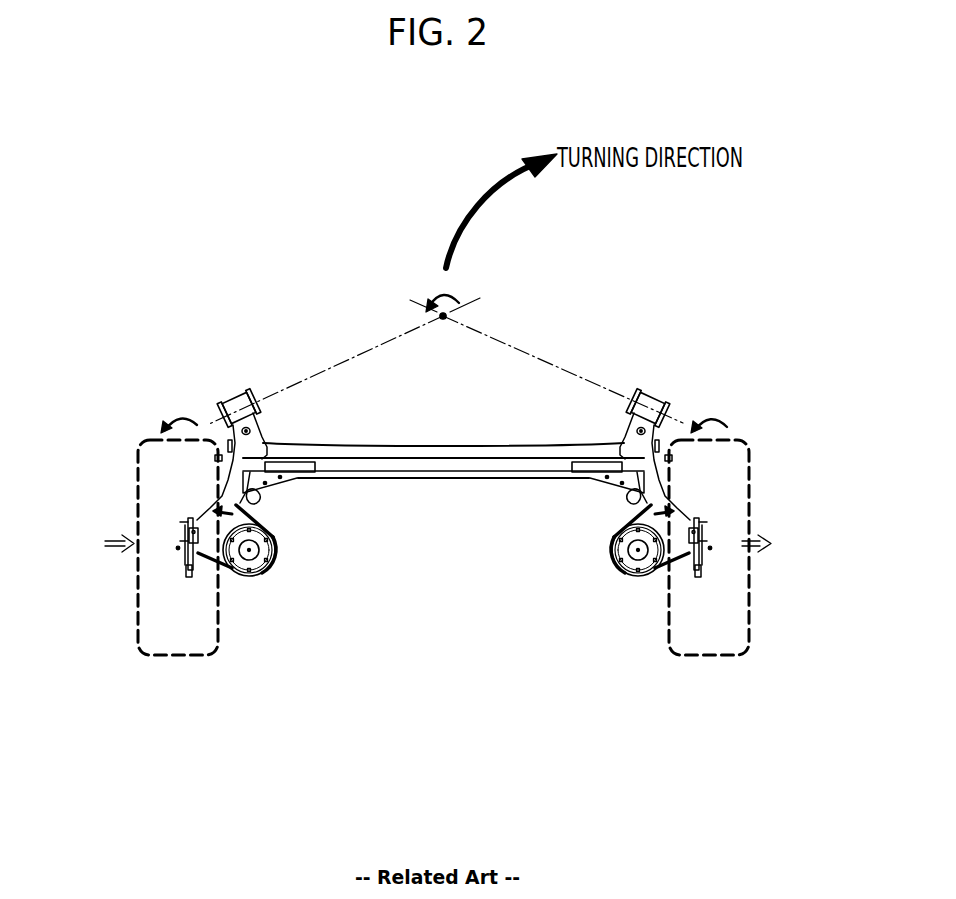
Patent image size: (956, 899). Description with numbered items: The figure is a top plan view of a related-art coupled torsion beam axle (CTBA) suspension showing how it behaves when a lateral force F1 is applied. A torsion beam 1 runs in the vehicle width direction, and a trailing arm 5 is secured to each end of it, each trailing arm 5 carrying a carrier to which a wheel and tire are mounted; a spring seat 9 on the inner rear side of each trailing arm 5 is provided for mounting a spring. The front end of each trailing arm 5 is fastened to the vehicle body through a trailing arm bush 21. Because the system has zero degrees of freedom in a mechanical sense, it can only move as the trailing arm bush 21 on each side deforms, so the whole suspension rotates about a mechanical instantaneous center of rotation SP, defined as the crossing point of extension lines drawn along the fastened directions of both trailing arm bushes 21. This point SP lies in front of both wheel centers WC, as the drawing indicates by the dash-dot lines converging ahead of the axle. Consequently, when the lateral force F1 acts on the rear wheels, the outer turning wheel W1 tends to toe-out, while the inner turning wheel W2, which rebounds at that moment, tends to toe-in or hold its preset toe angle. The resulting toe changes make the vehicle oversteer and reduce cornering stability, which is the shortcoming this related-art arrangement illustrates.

The torsion beam 1 is at (443, 480).
The trailing arm bush 21 is at (239, 392).
The trailing arm 5 is at (257, 501).
The spring seat 9 is at (272, 560).
The mechanical instantaneous center of rotation SP is at (443, 330).
The outer turning wheel W1 is at (190, 657).
The inner turning wheel W2 is at (720, 657).
The wheel center WC is at (178, 546).
The lateral force F1 is at (438, 543).